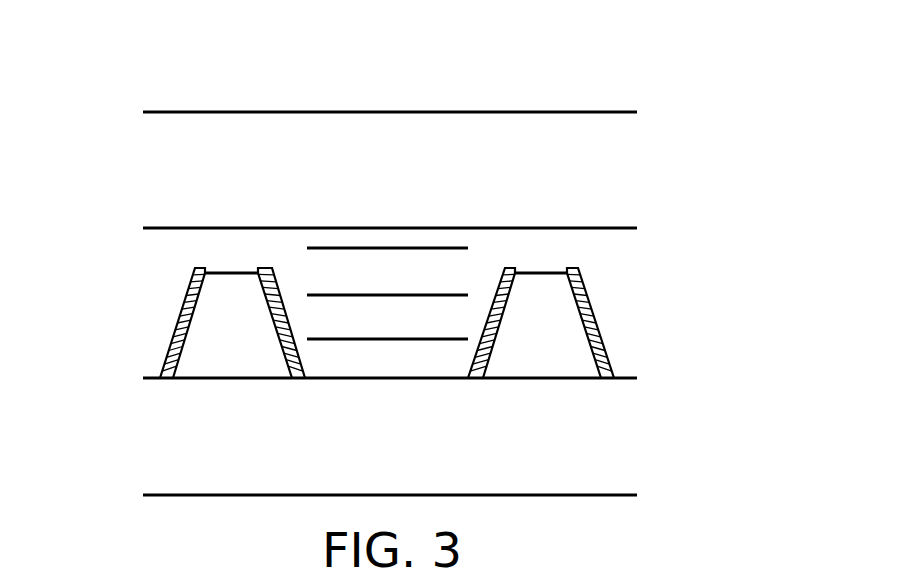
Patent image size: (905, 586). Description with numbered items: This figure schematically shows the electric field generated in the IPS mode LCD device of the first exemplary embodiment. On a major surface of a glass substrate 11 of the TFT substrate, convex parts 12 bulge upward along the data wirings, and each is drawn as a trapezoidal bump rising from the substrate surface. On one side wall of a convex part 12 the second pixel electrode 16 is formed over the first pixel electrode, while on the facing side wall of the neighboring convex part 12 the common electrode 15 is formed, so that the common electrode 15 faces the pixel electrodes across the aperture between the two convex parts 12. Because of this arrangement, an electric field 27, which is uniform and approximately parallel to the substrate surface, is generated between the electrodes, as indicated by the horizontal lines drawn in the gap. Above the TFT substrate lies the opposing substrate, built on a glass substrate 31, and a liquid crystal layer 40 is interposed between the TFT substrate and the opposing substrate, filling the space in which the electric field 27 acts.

The glass substrate 11 is at (618, 456).
The convex part 12 is at (236, 365).
The common electrode 15 is at (513, 267).
The second pixel electrode 16 is at (274, 266).
The electric field 27 is at (404, 247).
The glass substrate 31 is at (562, 127).
The liquid crystal layer 40 is at (165, 280).